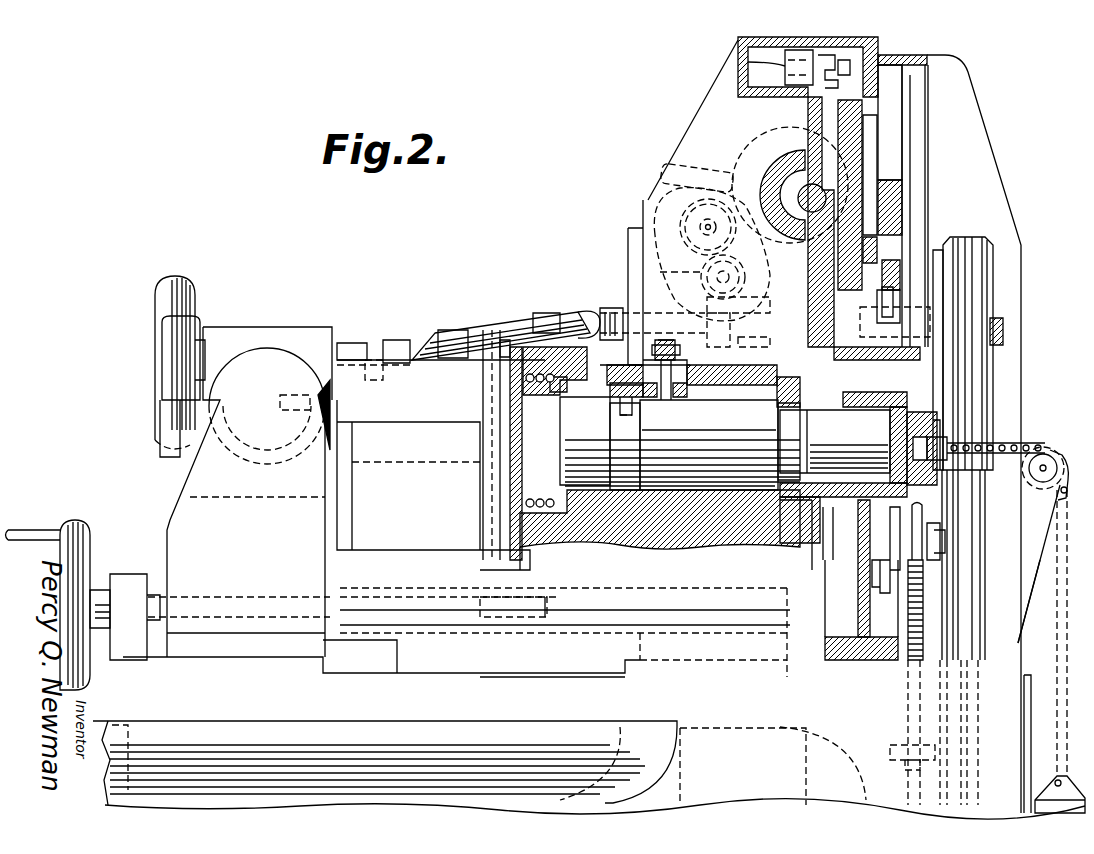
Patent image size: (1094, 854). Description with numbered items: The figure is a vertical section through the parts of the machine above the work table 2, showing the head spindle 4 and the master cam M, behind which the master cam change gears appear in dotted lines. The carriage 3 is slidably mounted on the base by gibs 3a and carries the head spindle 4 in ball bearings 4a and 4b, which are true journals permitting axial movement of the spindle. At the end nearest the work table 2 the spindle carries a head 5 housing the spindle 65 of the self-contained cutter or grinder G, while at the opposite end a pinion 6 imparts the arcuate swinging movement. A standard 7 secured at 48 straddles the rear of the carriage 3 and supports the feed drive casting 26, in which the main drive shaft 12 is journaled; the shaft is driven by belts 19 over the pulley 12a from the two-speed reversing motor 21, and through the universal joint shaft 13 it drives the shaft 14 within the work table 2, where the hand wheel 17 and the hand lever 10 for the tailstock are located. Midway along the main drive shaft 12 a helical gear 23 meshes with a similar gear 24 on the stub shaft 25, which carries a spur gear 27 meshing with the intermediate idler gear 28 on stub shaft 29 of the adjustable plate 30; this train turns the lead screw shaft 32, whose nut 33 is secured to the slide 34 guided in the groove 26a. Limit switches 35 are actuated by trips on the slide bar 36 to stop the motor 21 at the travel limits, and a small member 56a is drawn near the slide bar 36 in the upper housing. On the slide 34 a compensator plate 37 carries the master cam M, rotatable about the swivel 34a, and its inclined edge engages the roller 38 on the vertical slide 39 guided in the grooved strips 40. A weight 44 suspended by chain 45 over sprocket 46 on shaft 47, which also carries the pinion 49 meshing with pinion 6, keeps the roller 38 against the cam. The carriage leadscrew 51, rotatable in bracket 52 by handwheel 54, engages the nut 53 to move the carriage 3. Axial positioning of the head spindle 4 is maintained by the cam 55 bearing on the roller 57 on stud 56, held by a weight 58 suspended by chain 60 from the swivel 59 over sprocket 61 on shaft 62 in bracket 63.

The work table 2 is at (188, 515).
The carriage 3 is at (564, 561).
The gibs 3a is at (518, 625).
The head spindle 4 is at (680, 443).
The ball bearing 4a is at (535, 365).
The ball bearing 4b is at (798, 375).
The head 5 is at (434, 501).
The pinion 6 is at (866, 408).
The standard 7 is at (860, 608).
The hand lever 10 is at (165, 336).
The main drive shaft 12 is at (653, 320).
The pulley 12a is at (992, 287).
The universal joint shaft 13 is at (507, 322).
The shaft 14 is at (342, 356).
The hand wheel 17 is at (172, 280).
The belts 19 is at (957, 238).
The two-speed reversing motor 21 is at (727, 745).
The helical gear 23 is at (716, 345).
The helical gear 24 is at (742, 280).
The stub shaft 25 is at (758, 255).
The feed drive casting 26 is at (806, 107).
The groove 26a is at (900, 58).
The spur gear 27 is at (673, 269).
The intermediate idler gear 28 is at (680, 210).
The stub shaft 29 is at (680, 212).
The adjustable plate 30 is at (686, 172).
The lead screw shaft 32 is at (785, 195).
The nut 33 is at (802, 186).
The slide 34 is at (812, 277).
The swivel 34a is at (850, 212).
The limit switches 35 is at (746, 60).
The slide bar 36 is at (820, 55).
The compensator plate 37 is at (862, 105).
The roller 38 is at (866, 232).
The slide 39 is at (905, 184).
The vertical grooved strips 40 is at (898, 147).
The weight 44 is at (897, 775).
The chain 45 is at (906, 690).
The sprocket 46 is at (925, 505).
The shaft 47 is at (940, 540).
The standard attachment point 48 is at (852, 550).
The pinion 49 is at (890, 593).
The carriage leadscrew 51 is at (232, 608).
The bracket 52 is at (125, 578).
The nut 53 is at (448, 620).
The handwheel 54 is at (78, 520).
The cam 55 is at (618, 388).
The stud 56 is at (666, 400).
The cam follower 56a is at (848, 58).
The roller 57 is at (688, 392).
The weight 58 is at (1050, 805).
The swivel 59 is at (948, 443).
The chain 60 is at (1045, 565).
The sprocket 61 is at (1062, 458).
The shaft 62 is at (1046, 458).
The bracket 63 is at (1014, 601).
The spindle 65 is at (300, 395).
The cutter or grinder G is at (267, 406).
The master cam M is at (870, 124).